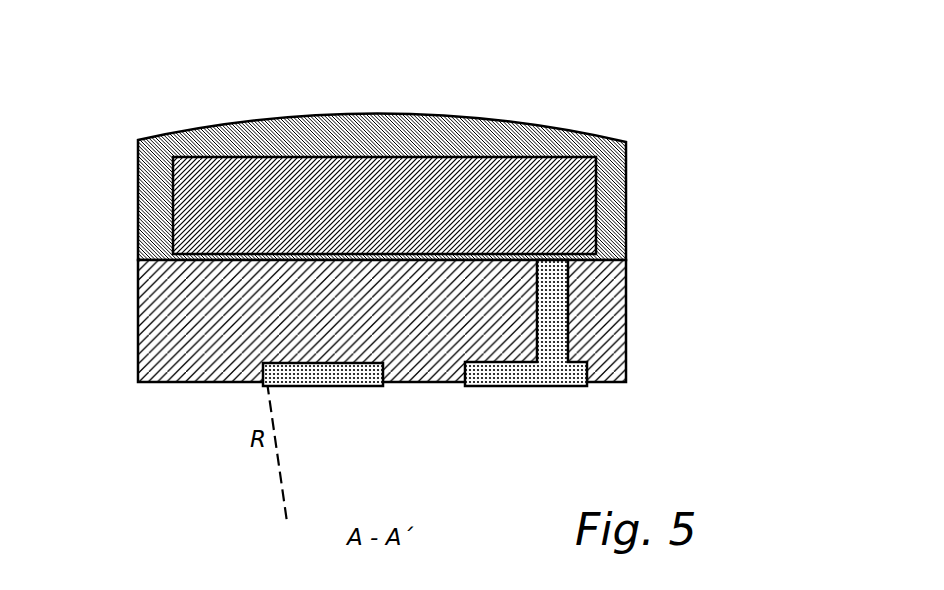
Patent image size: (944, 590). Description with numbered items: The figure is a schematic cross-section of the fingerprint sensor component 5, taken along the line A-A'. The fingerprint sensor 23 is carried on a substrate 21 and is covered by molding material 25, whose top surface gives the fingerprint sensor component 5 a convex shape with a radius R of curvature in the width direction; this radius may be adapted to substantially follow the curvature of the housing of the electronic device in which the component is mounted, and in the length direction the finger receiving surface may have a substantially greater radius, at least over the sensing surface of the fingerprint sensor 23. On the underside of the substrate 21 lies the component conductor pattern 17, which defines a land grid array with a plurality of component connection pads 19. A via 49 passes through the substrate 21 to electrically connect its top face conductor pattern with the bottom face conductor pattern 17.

The fingerprint sensor component 5 is at (645, 73).
The molding material 25 is at (432, 113).
The fingerprint sensor 23 is at (198, 214).
The substrate 21 is at (172, 298).
The via 49 is at (560, 320).
The component connection pad 19 is at (325, 387).
The component conductor pattern 17 is at (392, 412).